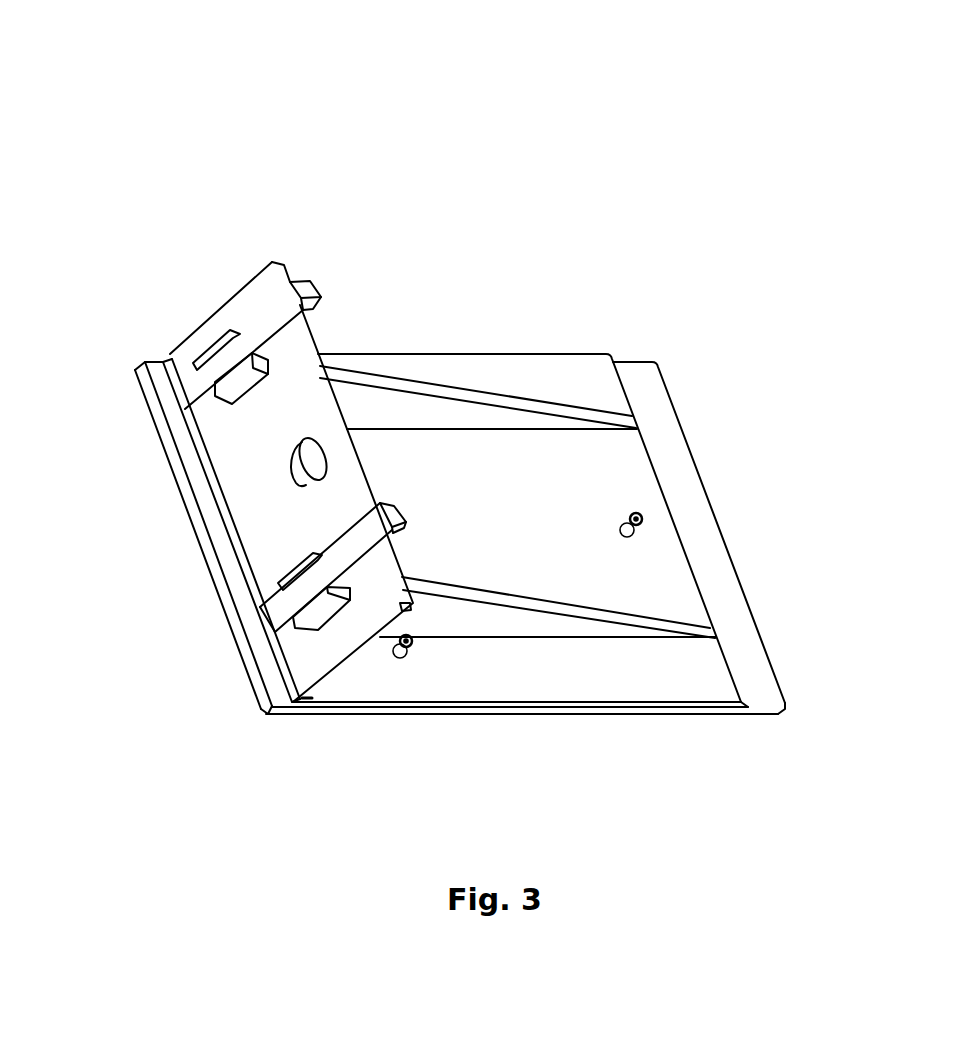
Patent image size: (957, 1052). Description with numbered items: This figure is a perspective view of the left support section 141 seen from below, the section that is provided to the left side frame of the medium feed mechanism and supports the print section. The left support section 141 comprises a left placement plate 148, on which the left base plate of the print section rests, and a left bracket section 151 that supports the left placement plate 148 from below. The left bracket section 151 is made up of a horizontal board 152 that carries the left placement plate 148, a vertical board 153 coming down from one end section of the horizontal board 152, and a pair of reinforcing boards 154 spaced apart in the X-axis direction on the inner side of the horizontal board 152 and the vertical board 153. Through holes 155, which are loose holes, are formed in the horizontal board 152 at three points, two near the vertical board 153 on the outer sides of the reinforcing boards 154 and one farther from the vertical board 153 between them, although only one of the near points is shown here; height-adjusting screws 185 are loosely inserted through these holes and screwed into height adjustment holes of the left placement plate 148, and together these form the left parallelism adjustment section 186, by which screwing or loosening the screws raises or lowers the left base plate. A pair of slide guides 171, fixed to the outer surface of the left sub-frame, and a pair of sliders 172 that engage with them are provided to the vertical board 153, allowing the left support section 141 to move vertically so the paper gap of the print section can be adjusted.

The left support section 141 is at (441, 84).
The left placement plate 148 is at (746, 641).
The left bracket section 151 is at (612, 768).
The horizontal board 152 is at (487, 683).
The vertical board 153 is at (356, 663).
The reinforcing boards 154 is at (541, 424).
The through holes 155 is at (396, 641).
The slide guides 171 is at (394, 505).
The sliders 172 is at (222, 375).
The height-adjusting screws 185 is at (410, 636).
The left parallelism adjustment section 186 is at (810, 318).